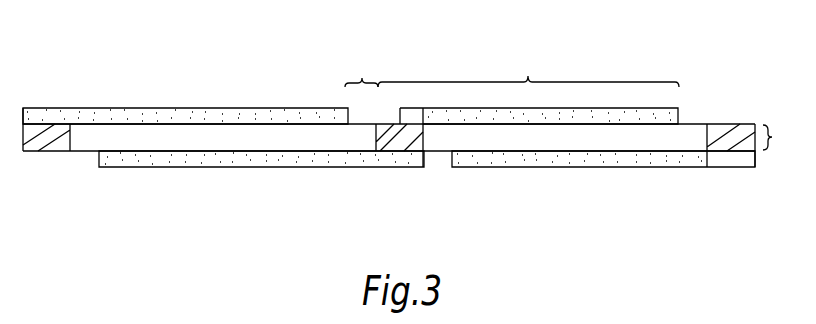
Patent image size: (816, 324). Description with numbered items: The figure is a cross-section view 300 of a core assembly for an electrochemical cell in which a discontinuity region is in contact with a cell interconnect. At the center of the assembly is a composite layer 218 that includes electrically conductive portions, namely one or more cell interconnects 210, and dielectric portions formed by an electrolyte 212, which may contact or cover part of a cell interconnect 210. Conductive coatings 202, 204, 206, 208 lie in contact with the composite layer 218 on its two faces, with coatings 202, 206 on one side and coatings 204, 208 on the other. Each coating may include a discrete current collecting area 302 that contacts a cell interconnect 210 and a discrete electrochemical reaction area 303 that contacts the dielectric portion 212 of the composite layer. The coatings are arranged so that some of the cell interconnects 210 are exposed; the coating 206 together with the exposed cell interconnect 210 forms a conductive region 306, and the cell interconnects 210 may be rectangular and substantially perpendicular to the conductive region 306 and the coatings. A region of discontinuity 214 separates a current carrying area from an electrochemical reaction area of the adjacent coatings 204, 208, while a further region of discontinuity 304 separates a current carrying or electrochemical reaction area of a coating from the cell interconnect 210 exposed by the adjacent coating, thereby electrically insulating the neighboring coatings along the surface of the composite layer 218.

The cross-section view 300 is at (714, 52).
The coating 202 is at (187, 115).
The coating 204 is at (193, 166).
The coating 206 is at (654, 115).
The coating 208 is at (572, 163).
The cell interconnect 210 is at (46, 149).
The electrolyte 212 is at (274, 140).
The region of discontinuity 214 is at (437, 160).
The composite layer 218 is at (785, 138).
The discrete current collecting area 302 is at (407, 117).
The discrete electrochemical reaction area 303 is at (449, 117).
The region of discontinuity 304 is at (361, 70).
The conductive region 306 is at (528, 69).